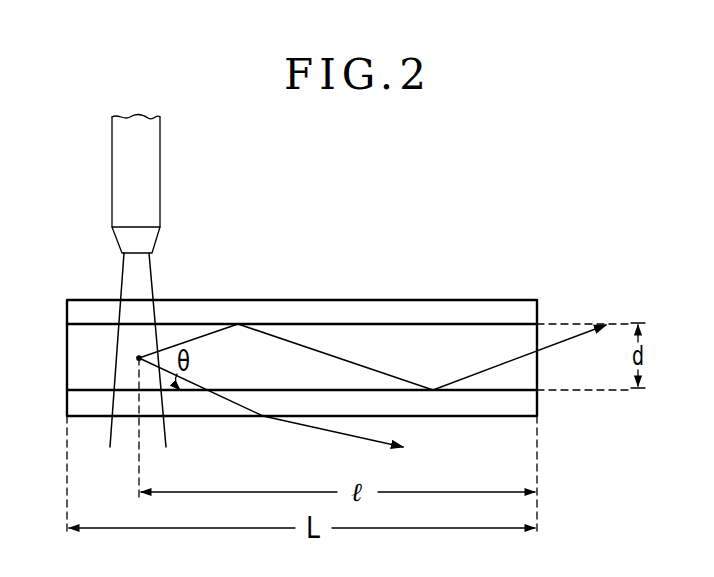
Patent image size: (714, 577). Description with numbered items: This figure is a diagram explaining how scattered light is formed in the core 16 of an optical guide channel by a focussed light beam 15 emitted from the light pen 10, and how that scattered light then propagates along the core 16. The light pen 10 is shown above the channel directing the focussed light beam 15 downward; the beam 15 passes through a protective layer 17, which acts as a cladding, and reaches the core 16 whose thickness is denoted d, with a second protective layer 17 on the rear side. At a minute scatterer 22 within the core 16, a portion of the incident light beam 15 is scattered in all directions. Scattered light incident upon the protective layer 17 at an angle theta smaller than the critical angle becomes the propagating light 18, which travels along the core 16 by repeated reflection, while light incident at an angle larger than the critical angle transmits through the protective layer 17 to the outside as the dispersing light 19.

The light pen 10 is at (160, 181).
The focussed light beam 15 is at (150, 276).
The core 16 is at (383, 350).
The protective layer 17 is at (510, 299).
The propagating light 18 is at (331, 355).
The dispersing light 19 is at (306, 425).
The minute scatterer 22 is at (137, 358).